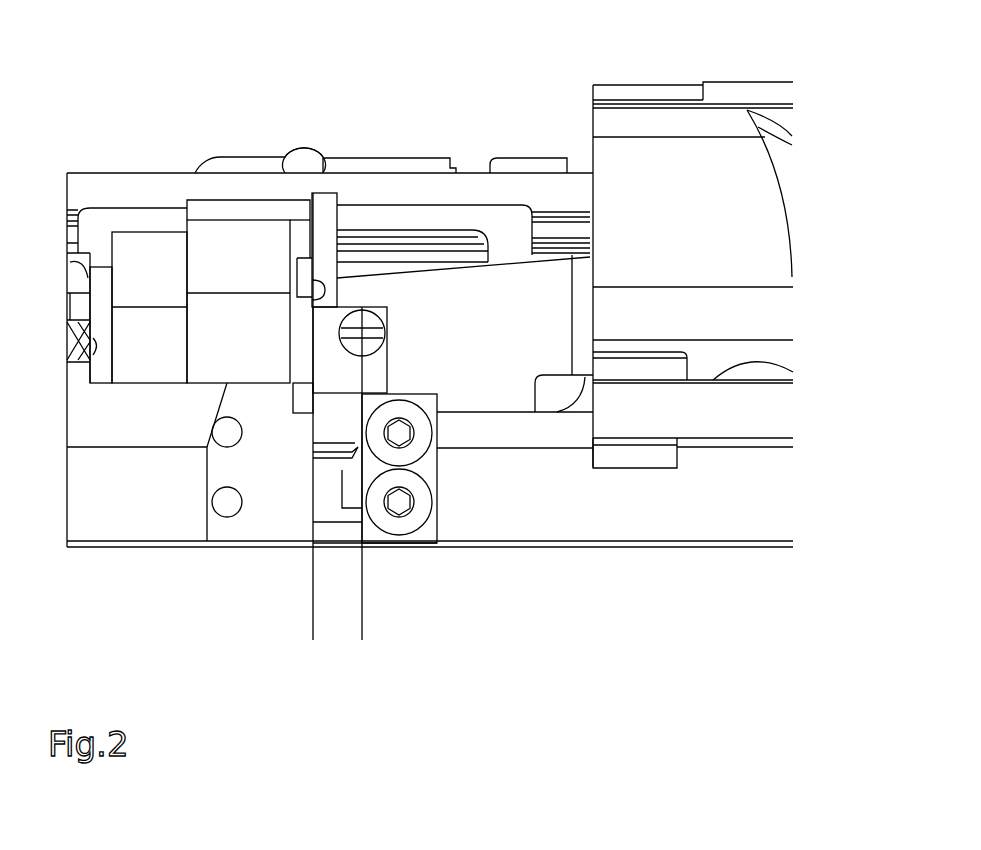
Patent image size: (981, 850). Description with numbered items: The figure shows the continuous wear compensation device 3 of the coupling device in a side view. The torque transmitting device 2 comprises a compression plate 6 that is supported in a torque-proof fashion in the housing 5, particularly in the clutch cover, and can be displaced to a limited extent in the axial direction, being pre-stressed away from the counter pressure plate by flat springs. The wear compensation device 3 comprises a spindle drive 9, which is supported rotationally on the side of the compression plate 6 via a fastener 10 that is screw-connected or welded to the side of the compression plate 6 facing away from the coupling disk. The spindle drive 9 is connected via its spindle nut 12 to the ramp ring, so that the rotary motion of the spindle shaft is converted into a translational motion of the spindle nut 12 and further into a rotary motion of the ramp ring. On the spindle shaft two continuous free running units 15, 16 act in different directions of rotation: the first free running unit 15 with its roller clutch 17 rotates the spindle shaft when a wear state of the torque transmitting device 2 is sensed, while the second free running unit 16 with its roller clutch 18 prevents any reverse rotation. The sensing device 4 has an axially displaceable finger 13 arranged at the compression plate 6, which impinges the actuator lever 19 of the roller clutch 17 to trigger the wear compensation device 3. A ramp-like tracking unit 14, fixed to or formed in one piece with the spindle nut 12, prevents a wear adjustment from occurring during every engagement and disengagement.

The torque transmitting device 2 is at (140, 590).
The wear compensation device 3 is at (527, 140).
The sensing device 4 is at (370, 575).
The housing 5 is at (730, 127).
The compression plate 6 is at (533, 507).
The spindle drive 9 is at (357, 243).
The fastener 10 is at (100, 357).
The spindle nut 12 is at (585, 233).
The finger 13 is at (340, 615).
The tracking unit 14 is at (460, 362).
The first free running unit 15 is at (205, 215).
The second free running unit 16 is at (110, 225).
The roller clutch 17 is at (235, 265).
The roller clutch 18 is at (143, 267).
The actuator lever 19 is at (307, 290).